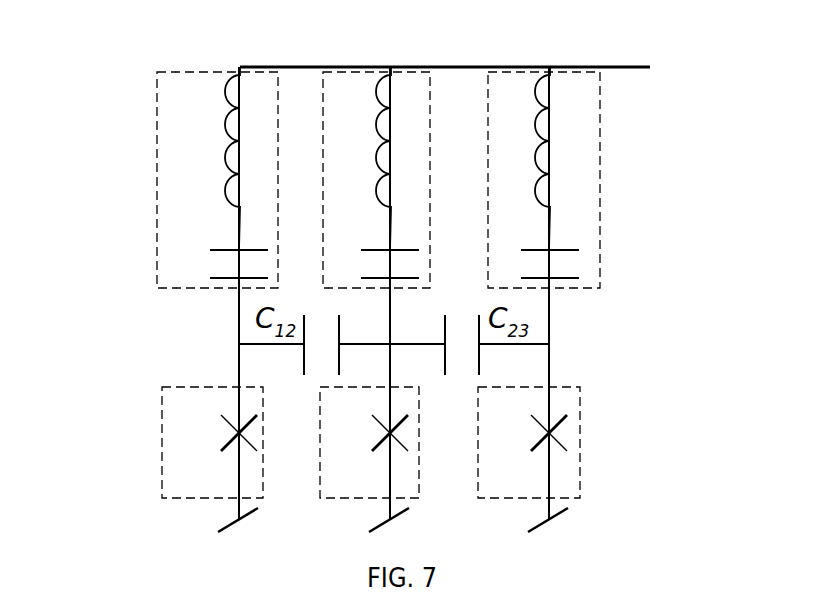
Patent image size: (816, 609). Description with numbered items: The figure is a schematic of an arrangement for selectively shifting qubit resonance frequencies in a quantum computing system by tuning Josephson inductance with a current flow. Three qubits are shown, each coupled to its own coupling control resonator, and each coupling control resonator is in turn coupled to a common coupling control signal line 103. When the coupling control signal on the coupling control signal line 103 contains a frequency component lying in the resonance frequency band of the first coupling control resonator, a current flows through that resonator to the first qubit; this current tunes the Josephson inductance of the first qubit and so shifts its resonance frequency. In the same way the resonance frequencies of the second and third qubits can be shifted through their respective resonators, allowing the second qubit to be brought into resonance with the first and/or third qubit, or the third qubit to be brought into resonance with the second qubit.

The coupling control signal line 103 is at (618, 67).